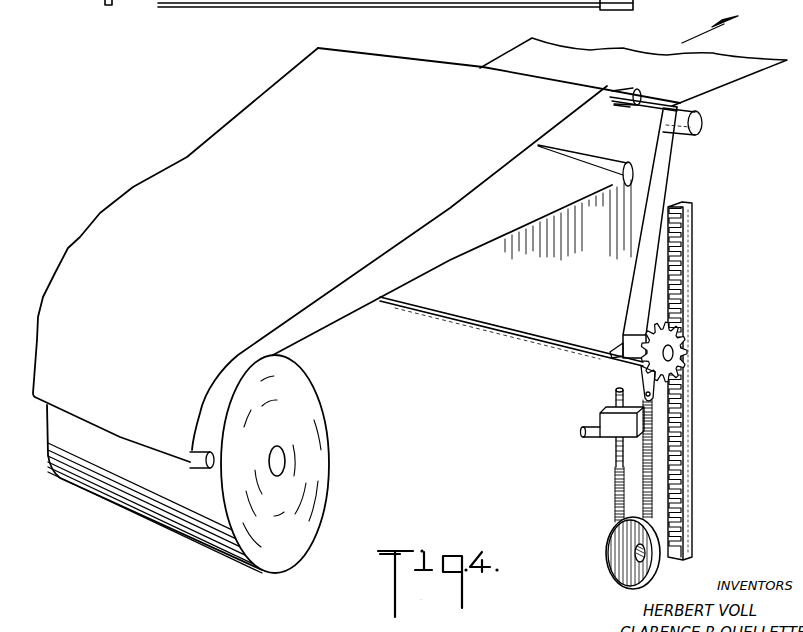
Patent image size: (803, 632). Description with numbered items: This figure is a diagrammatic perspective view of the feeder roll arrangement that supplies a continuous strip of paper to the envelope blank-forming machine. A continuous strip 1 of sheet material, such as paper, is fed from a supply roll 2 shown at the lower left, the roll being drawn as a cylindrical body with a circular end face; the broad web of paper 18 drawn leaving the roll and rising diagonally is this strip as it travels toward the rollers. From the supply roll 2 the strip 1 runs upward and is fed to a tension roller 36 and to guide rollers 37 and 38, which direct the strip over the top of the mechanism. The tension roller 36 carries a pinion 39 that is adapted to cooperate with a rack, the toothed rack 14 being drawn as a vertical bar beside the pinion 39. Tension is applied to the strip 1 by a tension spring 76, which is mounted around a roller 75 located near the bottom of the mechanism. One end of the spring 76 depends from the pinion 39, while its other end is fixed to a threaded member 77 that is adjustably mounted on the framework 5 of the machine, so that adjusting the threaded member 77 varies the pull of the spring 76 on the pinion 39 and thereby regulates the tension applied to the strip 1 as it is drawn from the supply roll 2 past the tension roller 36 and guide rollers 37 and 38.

The continuous strip 1 is at (487, 325).
The supply roll 2 is at (267, 555).
The framework 5 is at (602, 412).
The rack 14 is at (685, 337).
The sheet 18 is at (197, 153).
The tension roller 36 is at (612, 356).
The guide roller 37 is at (615, 181).
The guide roller 38 is at (705, 125).
The pinion 39 is at (680, 362).
The roller 75 is at (613, 575).
The tension spring 76 is at (610, 513).
The threaded member 77 is at (613, 447).